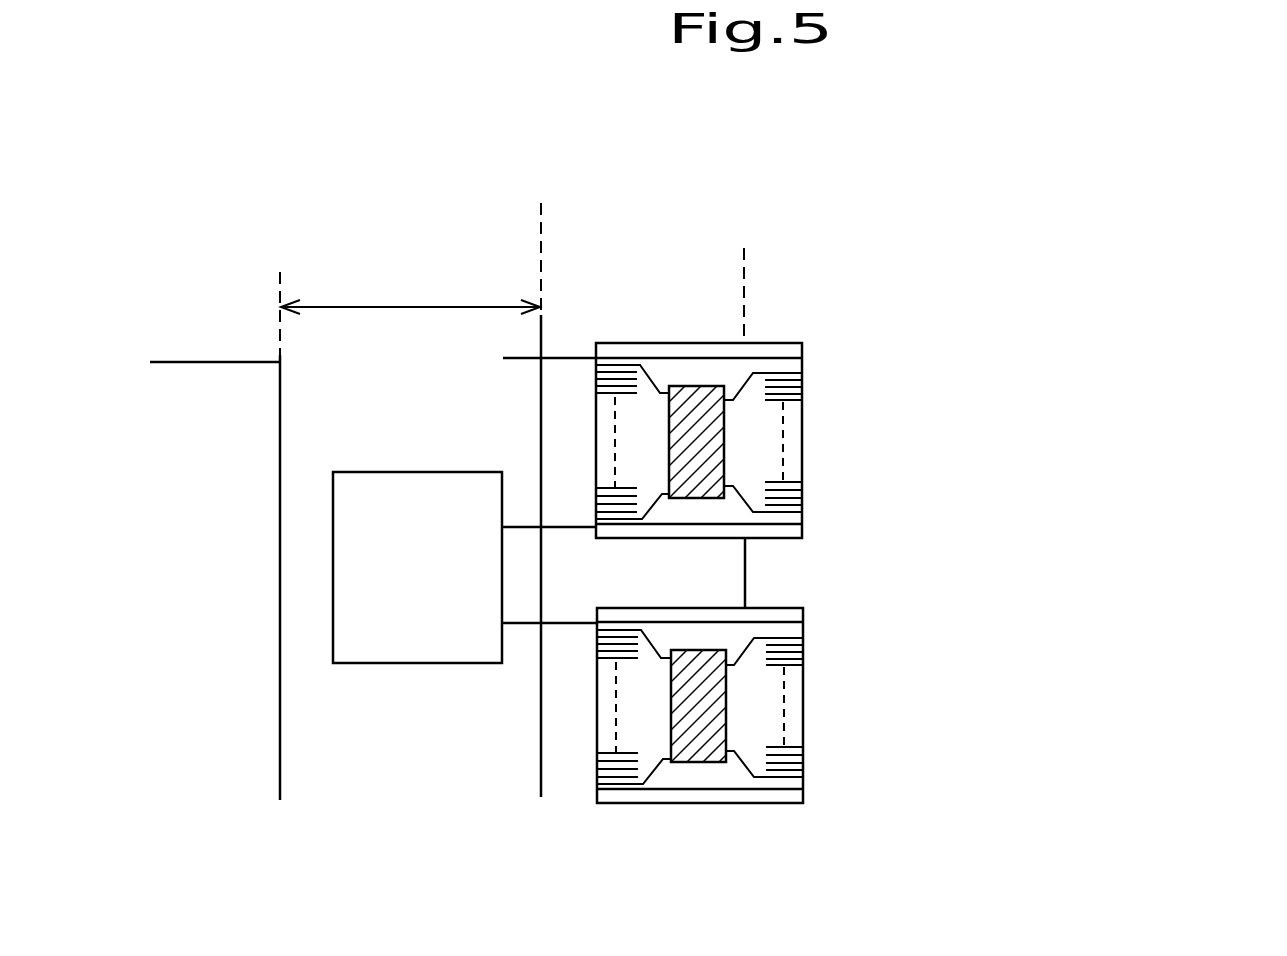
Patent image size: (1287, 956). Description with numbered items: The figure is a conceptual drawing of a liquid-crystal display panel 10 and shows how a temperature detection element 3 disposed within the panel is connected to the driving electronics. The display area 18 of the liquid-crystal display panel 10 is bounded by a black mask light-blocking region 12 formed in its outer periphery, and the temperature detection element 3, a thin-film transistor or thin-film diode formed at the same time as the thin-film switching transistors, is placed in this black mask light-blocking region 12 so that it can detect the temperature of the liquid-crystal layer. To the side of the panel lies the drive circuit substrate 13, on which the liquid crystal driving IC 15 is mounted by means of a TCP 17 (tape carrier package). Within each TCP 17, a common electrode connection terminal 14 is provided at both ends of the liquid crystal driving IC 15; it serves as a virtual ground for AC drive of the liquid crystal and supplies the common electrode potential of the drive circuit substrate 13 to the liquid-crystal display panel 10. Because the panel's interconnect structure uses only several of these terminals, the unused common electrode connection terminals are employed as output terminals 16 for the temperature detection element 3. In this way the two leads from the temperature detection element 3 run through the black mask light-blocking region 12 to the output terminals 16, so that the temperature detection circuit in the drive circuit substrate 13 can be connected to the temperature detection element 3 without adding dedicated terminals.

The temperature detection element 3 is at (355, 472).
The liquid-crystal display panel 10 is at (520, 230).
The black mask light-blocking region 12 is at (347, 305).
The drive circuit substrate 13 is at (1080, 290).
The common electrode connection terminal 14 is at (768, 358).
The liquid crystal driving IC 15 is at (724, 427).
The output terminal 16 is at (772, 525).
The TCP 17 is at (787, 672).
The display area 18 is at (248, 713).